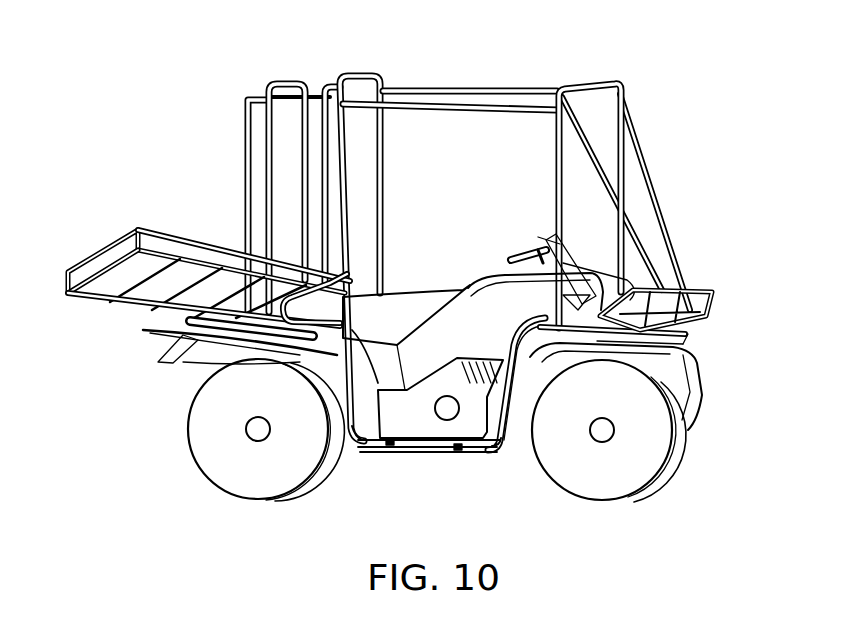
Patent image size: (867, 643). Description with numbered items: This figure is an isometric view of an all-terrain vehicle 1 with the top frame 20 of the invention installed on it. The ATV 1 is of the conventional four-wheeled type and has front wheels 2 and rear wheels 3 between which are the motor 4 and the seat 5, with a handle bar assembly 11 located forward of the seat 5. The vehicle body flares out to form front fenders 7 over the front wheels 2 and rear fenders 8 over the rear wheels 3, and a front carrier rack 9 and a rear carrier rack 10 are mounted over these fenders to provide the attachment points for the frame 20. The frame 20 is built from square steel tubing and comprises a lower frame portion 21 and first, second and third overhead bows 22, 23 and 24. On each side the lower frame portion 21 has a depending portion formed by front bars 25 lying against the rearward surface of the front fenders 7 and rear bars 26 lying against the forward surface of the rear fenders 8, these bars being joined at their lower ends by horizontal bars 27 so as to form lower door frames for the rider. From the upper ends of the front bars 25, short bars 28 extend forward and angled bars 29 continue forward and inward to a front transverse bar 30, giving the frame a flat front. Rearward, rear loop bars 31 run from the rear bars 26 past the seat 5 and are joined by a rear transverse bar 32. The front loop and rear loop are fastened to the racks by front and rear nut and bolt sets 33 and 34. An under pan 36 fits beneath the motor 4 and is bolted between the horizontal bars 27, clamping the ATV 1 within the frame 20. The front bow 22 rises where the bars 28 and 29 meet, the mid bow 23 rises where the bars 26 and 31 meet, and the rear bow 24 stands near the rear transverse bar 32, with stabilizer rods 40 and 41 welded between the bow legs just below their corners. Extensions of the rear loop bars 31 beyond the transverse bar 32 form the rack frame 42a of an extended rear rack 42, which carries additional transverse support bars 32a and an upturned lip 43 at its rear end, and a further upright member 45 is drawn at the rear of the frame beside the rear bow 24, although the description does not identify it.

The all-terrain vehicle 1 is at (483, 252).
The front wheels 2 is at (660, 440).
The rear wheels 3 is at (190, 436).
The motor 4 is at (418, 420).
The seat 5 is at (405, 300).
The front fenders 7 is at (688, 382).
The rear fenders 8 is at (162, 350).
The front carrier rack 9 is at (712, 296).
The rear carrier rack 10 is at (190, 323).
The handle bar assembly 11 is at (577, 260).
The top frame 20 is at (376, 47).
The lower frame portion 21 is at (422, 470).
The first overhead bow 22 is at (590, 86).
The second overhead bow 23 is at (382, 74).
The third overhead bow 24 is at (290, 80).
The front bars 25 is at (498, 456).
The rear bars 26 is at (340, 428).
The horizontal bars 27 is at (440, 456).
The short bars 28 is at (538, 318).
The angled bars 29 is at (597, 332).
The front transverse bar 30 is at (700, 333).
The rear loop bars 31 is at (350, 272).
The rear transverse bar 32 is at (287, 276).
The transverse support bars 32a is at (164, 256).
The front nuts and bolts 33 is at (636, 300).
The rear nuts and bolts 34 is at (334, 321).
The under pan 36 is at (462, 452).
The stabilizer rods 40 is at (487, 90).
The stabilizer rods 41 is at (326, 84).
The extended rear rack 42 is at (146, 208).
The rack frame 42a is at (205, 266).
The upturned lip 43 is at (96, 265).
The rear post 45 is at (243, 112).